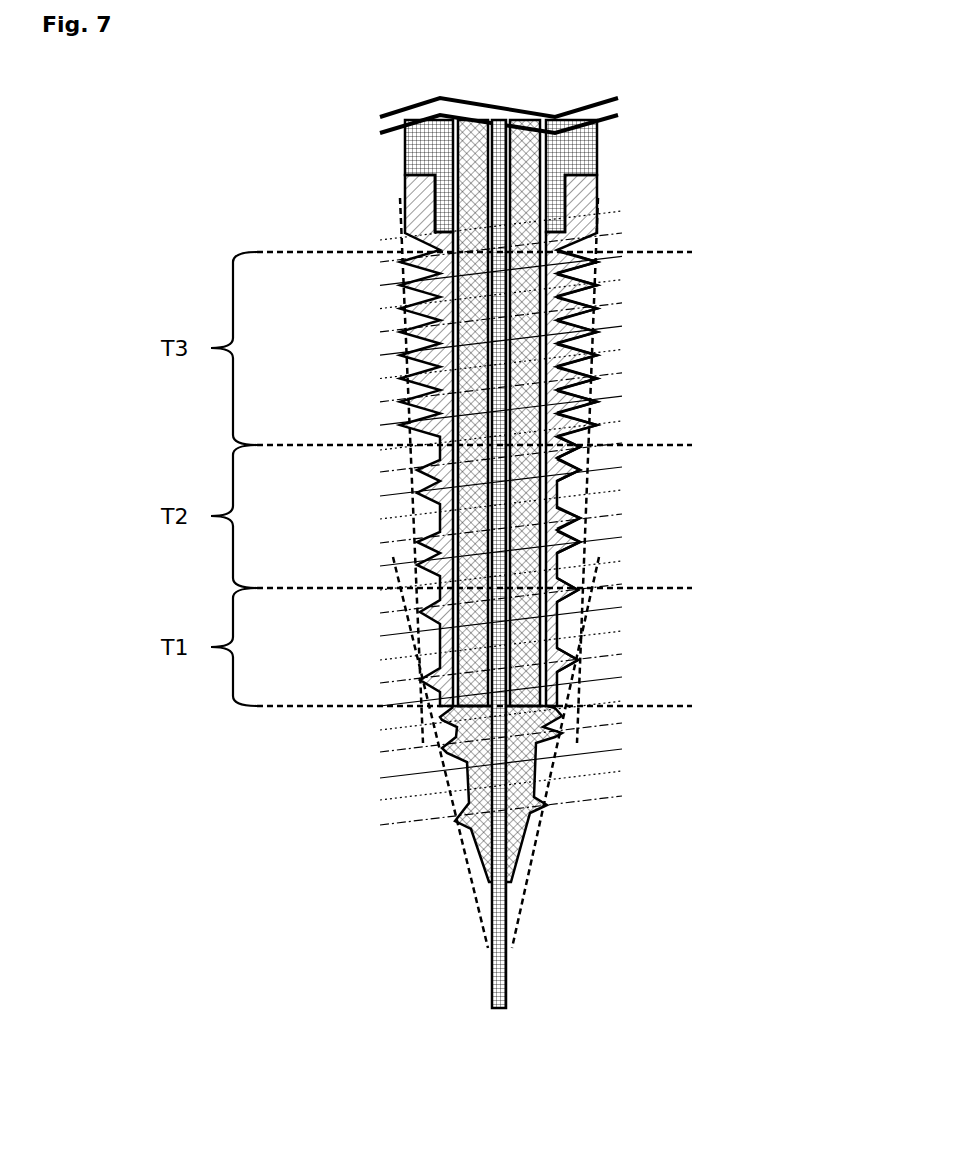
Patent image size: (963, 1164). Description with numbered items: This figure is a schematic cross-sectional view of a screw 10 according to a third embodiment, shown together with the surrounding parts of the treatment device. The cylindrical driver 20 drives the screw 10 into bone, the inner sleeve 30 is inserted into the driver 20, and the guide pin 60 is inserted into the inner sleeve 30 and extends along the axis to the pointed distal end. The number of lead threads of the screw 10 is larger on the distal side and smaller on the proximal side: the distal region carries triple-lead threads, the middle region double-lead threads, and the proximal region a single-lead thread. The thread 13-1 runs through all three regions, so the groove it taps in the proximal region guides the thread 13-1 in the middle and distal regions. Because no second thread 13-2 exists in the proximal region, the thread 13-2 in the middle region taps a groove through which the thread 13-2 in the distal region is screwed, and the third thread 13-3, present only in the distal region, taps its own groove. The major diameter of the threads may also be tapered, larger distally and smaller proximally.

The screw 10 is at (583, 222).
The cylindrical driver 20 is at (592, 143).
The inner sleeve 30 is at (535, 197).
The guide pin 60 is at (502, 983).
The thread 13-1 is at (592, 304).
The second thread 13-2 is at (592, 256).
The third thread 13-3 is at (592, 281).